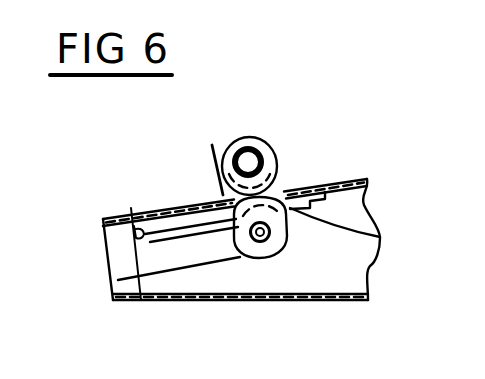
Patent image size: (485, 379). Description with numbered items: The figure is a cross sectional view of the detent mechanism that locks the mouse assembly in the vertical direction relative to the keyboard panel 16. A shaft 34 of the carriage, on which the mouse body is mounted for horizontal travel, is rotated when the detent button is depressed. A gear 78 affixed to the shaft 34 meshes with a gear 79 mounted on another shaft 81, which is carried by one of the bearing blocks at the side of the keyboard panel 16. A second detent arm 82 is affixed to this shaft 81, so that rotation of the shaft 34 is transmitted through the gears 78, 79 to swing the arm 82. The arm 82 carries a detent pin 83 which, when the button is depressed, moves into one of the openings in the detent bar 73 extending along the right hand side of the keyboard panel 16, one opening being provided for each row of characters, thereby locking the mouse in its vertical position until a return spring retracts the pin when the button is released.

The keyboard panel 16 is at (330, 185).
The shaft 34 is at (257, 157).
The detent bar 73 is at (378, 231).
The gear 78 is at (247, 138).
The gear 79 is at (277, 242).
The shaft 81 is at (260, 240).
The second detent arm 82 is at (150, 258).
The detent pin 83 is at (130, 207).